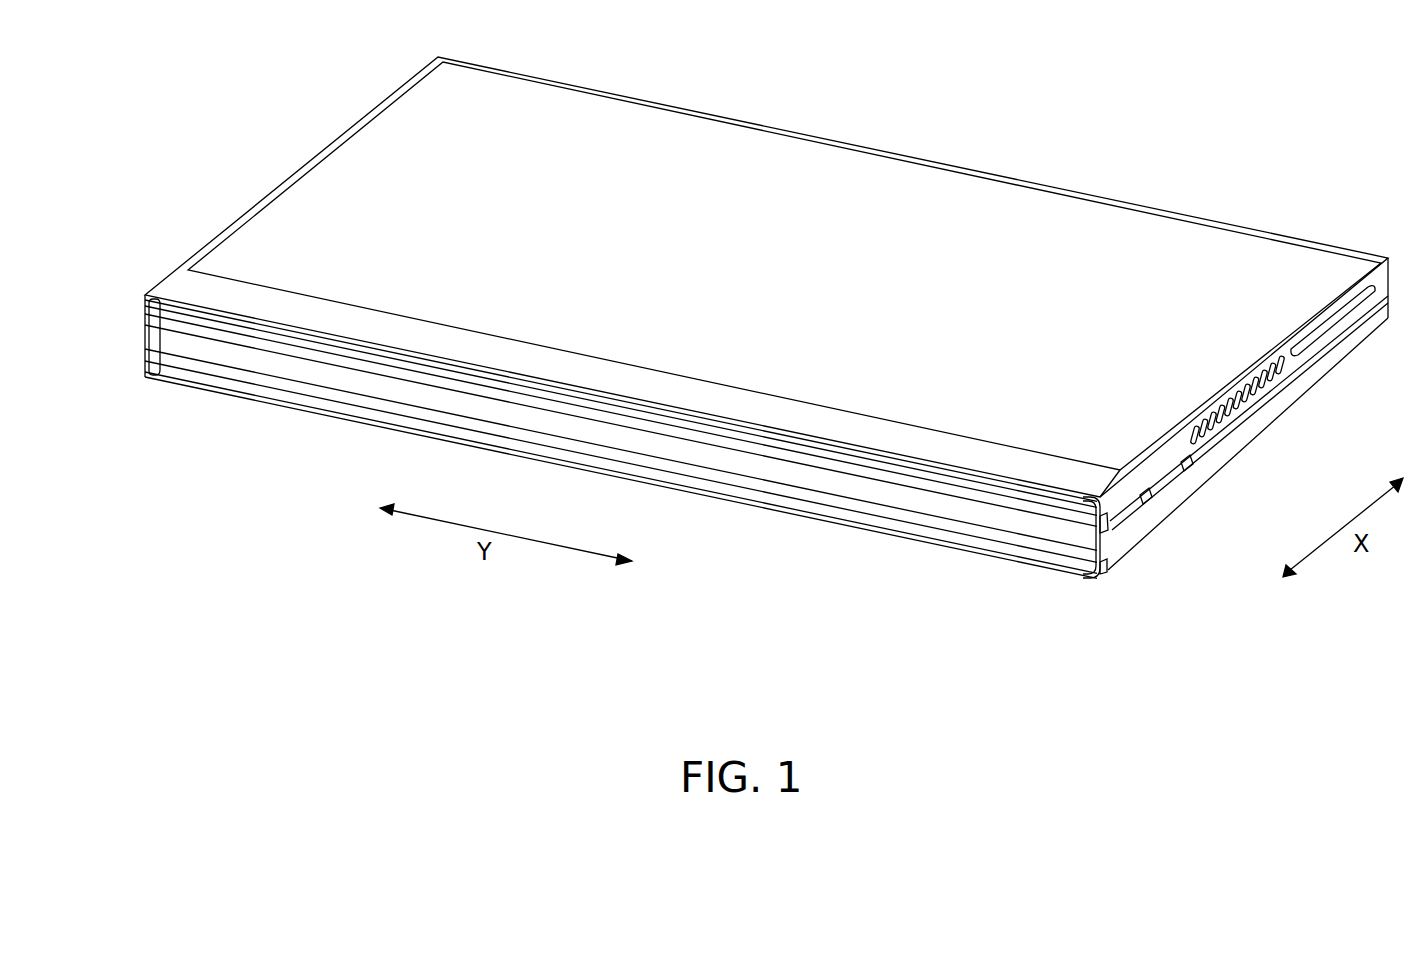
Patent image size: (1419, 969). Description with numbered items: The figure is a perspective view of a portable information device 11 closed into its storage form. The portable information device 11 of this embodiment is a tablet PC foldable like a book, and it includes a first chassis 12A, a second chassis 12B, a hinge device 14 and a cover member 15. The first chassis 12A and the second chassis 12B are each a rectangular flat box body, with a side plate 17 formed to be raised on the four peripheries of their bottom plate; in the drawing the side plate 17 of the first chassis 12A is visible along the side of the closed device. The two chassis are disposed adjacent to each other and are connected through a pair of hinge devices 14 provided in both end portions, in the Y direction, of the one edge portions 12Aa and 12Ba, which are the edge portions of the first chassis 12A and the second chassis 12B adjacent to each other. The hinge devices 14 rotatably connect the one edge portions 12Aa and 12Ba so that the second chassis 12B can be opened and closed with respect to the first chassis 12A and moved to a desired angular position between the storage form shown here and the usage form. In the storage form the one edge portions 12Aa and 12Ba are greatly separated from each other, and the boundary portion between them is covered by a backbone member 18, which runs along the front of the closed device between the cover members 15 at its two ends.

The portable information device 11 is at (240, 90).
The first chassis 12A is at (1239, 458).
The second chassis 12B is at (906, 194).
The one edge portion of the first chassis 12Aa is at (1106, 571).
The one edge portion of the second chassis 12Ba is at (1106, 522).
The hinge device 14 is at (164, 337).
The cover member 15 is at (146, 332).
The side plate 17 is at (1286, 362).
The backbone member 18 is at (531, 421).